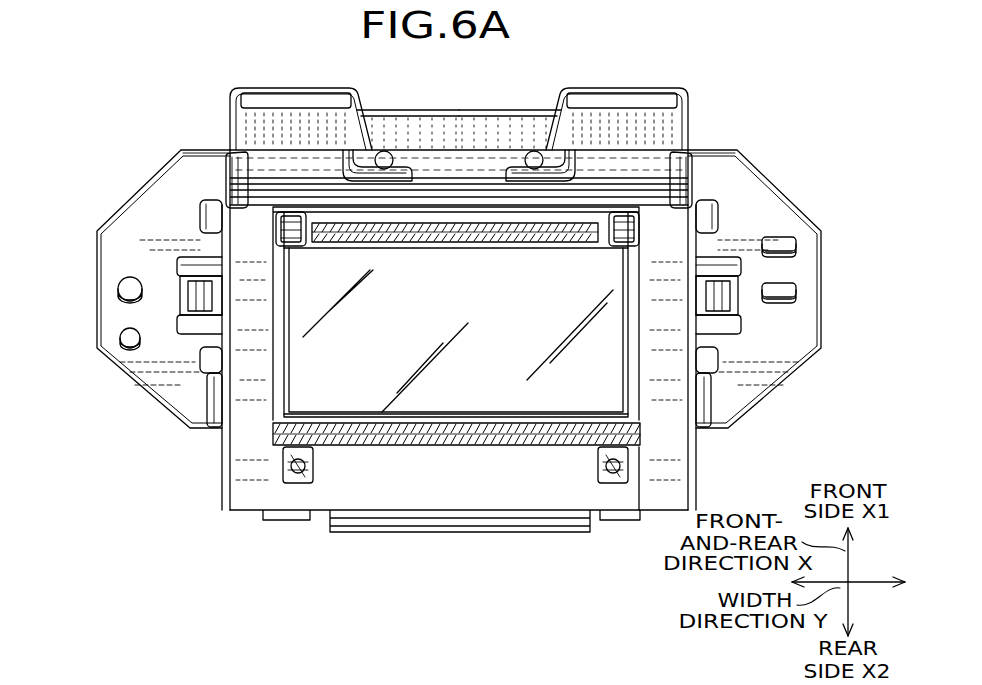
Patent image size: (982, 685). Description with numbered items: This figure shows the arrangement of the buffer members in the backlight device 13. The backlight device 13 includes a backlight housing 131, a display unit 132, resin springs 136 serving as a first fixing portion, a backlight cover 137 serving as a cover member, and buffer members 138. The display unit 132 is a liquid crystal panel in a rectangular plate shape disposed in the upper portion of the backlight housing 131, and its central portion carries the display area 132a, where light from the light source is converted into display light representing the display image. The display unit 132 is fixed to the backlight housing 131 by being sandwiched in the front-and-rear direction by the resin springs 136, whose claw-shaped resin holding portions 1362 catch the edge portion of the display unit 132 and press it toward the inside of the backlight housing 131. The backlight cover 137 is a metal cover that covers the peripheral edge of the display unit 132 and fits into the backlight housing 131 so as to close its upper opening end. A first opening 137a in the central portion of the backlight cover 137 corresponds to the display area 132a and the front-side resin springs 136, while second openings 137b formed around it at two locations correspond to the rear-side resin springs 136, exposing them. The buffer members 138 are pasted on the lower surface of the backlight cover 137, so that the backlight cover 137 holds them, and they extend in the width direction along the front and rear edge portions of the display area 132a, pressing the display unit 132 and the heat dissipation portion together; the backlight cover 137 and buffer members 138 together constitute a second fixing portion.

The backlight device 13 is at (184, 70).
The backlight housing 131 is at (688, 138).
The display unit 132 is at (283, 345).
The display area 132a is at (333, 367).
The resin springs 136 is at (455, 307).
The resin holding portions 1362 is at (233, 193).
The backlight cover 137 is at (663, 223).
The first opening 137a is at (708, 358).
The second opening 137b is at (630, 478).
The buffer members 138 is at (557, 225).